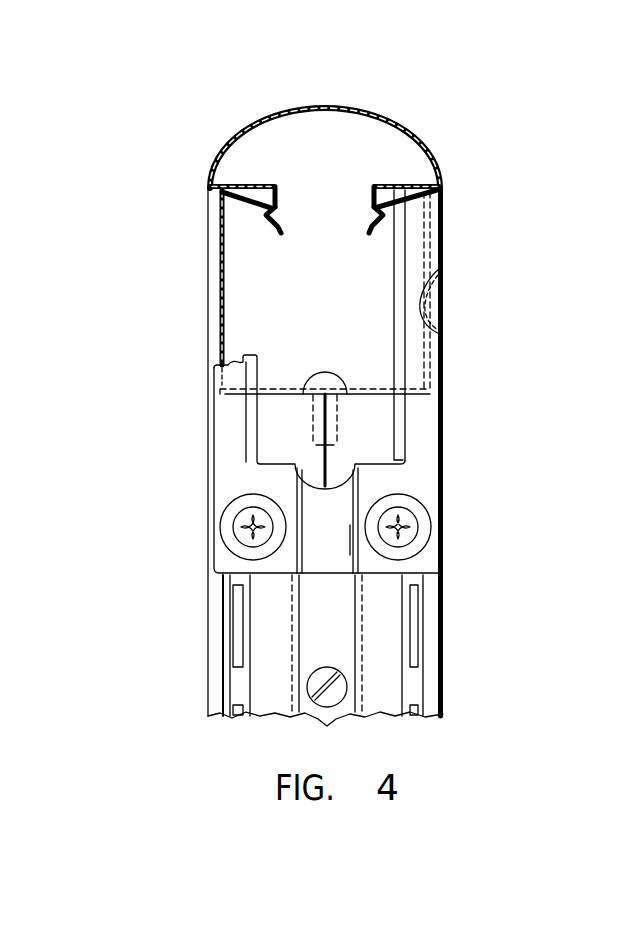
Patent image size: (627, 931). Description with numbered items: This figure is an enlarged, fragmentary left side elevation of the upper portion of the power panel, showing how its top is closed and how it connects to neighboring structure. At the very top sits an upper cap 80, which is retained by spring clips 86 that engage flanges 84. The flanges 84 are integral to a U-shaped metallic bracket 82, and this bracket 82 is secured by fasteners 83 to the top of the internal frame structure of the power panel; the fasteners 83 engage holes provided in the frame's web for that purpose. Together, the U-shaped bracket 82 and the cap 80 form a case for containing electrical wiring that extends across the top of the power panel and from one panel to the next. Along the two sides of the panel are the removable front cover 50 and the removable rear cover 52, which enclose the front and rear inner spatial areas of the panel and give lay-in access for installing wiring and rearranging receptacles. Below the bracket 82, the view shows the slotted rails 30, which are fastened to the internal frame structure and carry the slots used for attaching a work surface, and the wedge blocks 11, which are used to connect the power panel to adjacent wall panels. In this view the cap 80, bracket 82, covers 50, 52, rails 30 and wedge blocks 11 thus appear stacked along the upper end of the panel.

The upper cap 80 is at (372, 115).
The flanges 84 is at (255, 200).
The spring clips 86 is at (276, 232).
The fasteners 83 is at (318, 372).
The U-shaped metallic bracket 82 is at (373, 391).
The removable rear cover 52 is at (213, 342).
The removable front cover 50 is at (437, 307).
The wedge blocks 11 is at (383, 477).
The slotted rails 30 is at (391, 632).